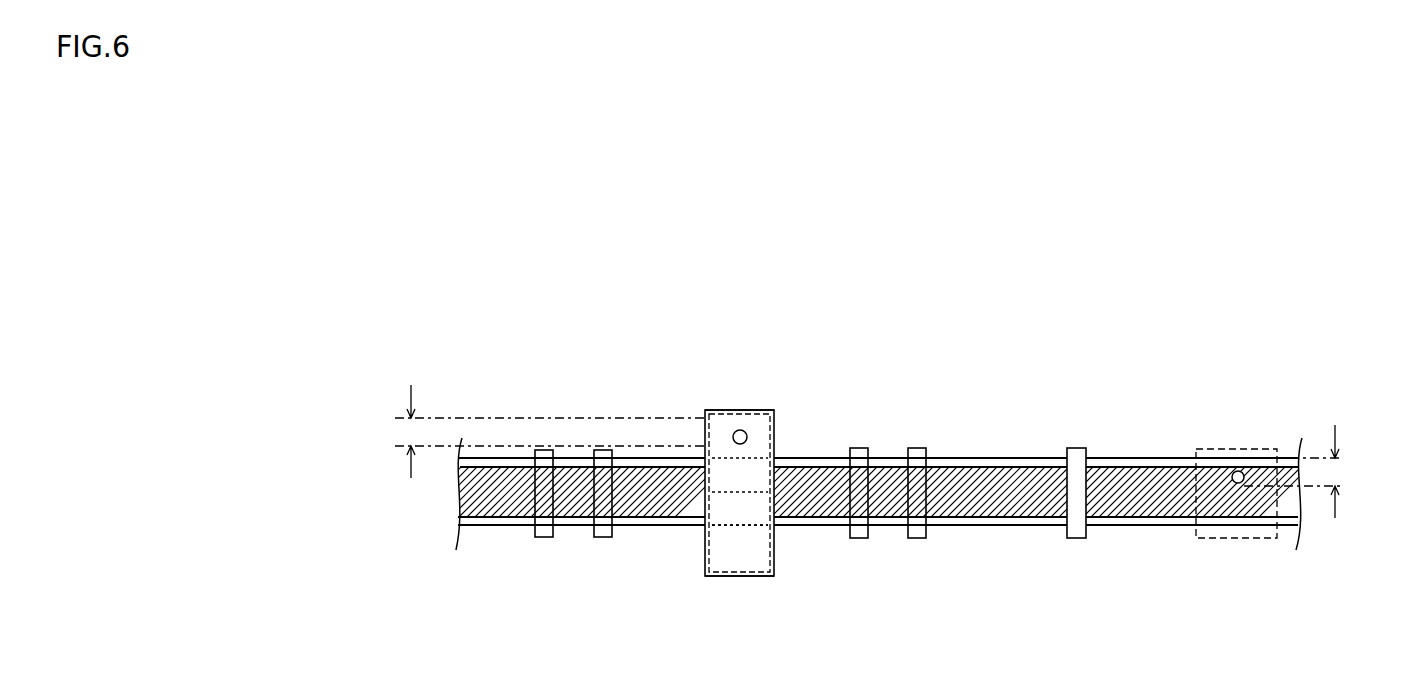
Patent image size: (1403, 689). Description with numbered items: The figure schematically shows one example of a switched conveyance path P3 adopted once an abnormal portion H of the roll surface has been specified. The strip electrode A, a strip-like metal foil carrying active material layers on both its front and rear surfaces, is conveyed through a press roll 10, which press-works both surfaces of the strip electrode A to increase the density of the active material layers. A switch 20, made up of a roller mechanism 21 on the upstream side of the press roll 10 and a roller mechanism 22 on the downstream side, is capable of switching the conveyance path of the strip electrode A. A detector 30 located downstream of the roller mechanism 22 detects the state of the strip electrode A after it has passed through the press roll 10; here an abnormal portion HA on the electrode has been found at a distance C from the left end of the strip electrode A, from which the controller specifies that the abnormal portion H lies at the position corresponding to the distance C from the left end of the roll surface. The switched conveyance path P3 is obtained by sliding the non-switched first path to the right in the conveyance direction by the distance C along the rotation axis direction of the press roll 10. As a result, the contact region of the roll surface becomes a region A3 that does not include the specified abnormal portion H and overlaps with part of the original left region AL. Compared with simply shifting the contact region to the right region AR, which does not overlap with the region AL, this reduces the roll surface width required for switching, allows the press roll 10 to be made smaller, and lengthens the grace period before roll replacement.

The strip electrode A is at (482, 526).
The switch 20 is at (810, 455).
The roller mechanism 21 is at (571, 440).
The roller mechanism 22 is at (896, 436).
The press roll 10 is at (760, 410).
The abnormal portion H is at (737, 430).
The region AL is at (738, 410).
The region AR is at (740, 578).
The region A3 is at (741, 530).
The detector 30 is at (1252, 449).
The abnormal portion HA is at (1235, 470).
The distance C is at (408, 431).
The switched conveyance path P3 is at (662, 527).